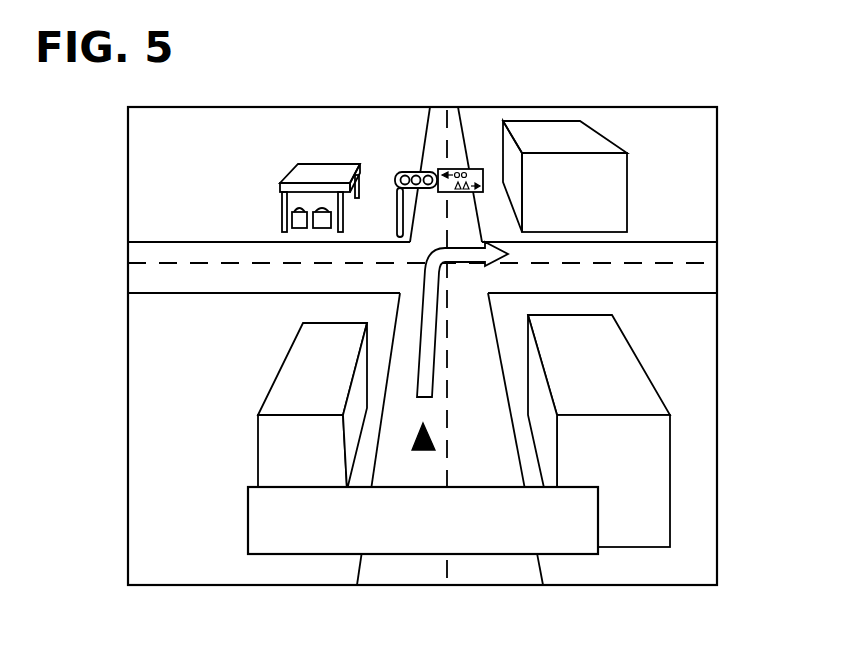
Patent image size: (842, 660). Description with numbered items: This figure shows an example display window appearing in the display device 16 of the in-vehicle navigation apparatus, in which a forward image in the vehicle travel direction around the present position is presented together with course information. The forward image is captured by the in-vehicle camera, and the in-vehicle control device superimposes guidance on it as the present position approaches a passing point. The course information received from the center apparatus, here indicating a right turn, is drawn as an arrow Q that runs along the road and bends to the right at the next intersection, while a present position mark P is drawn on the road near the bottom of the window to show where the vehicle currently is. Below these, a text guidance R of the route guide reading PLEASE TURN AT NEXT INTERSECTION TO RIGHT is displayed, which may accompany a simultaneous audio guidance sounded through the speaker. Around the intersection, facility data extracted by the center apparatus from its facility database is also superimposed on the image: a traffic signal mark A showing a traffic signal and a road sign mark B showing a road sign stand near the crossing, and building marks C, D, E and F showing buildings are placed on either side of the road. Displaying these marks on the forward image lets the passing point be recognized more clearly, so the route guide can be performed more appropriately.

The display device 16 is at (717, 396).
The traffic signal mark A is at (418, 172).
The road sign mark B is at (472, 169).
The building mark C is at (296, 168).
The building mark D is at (627, 184).
The building mark E is at (287, 356).
The building mark F is at (626, 337).
The present position mark P is at (420, 453).
The arrow Q is at (417, 360).
The text guidance R is at (248, 516).